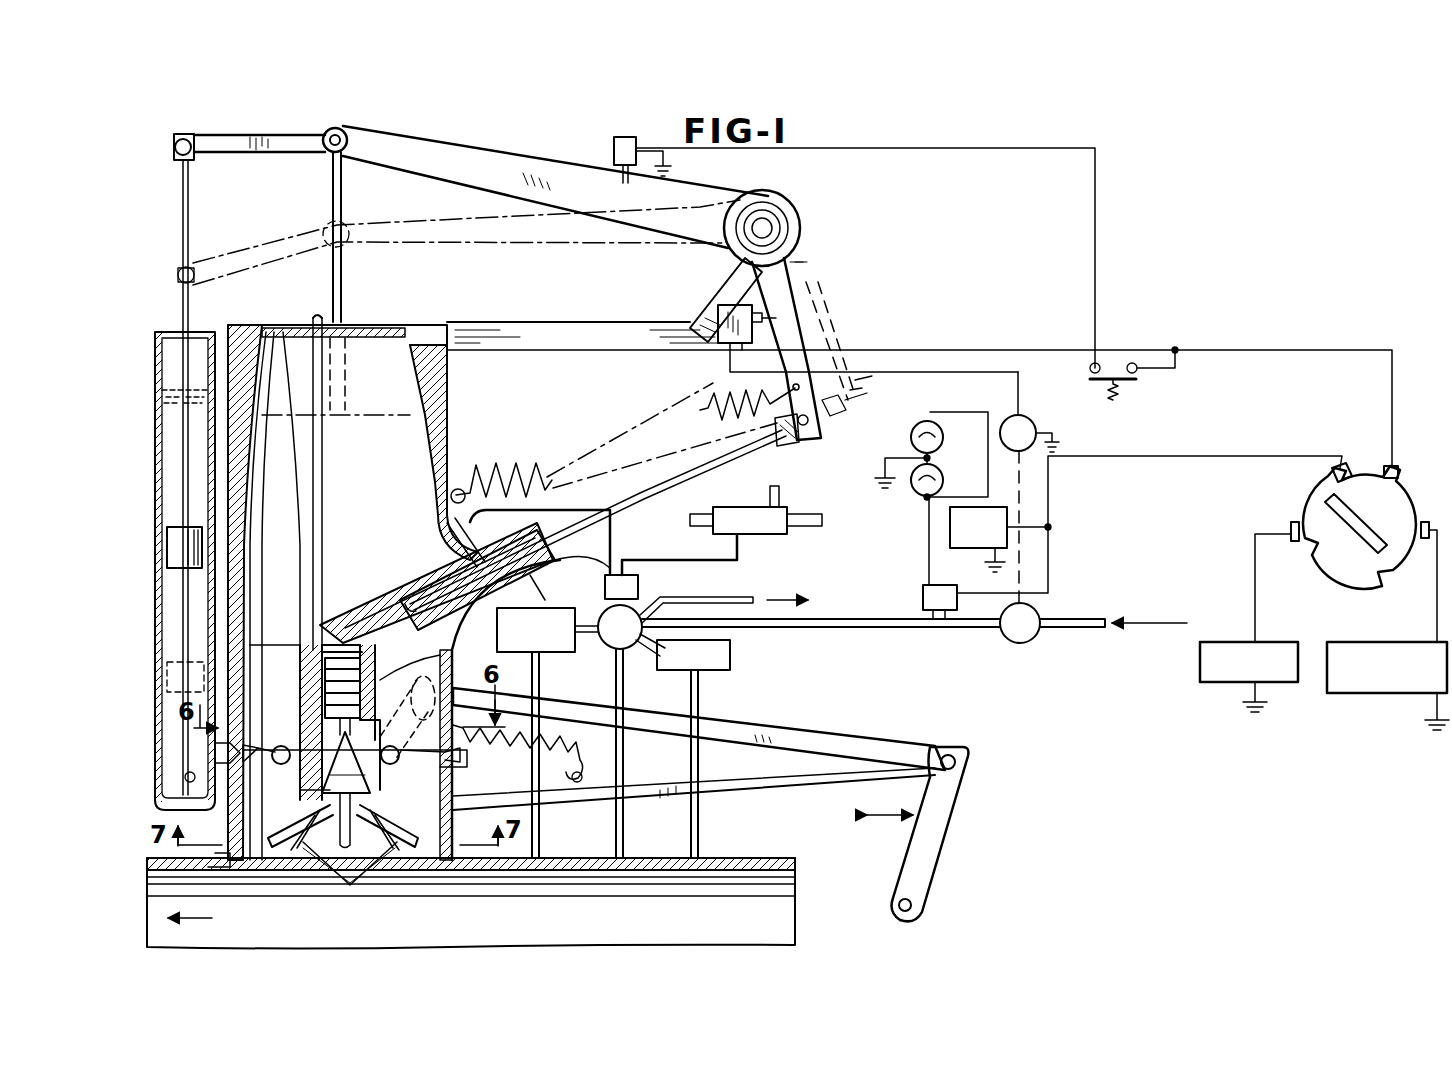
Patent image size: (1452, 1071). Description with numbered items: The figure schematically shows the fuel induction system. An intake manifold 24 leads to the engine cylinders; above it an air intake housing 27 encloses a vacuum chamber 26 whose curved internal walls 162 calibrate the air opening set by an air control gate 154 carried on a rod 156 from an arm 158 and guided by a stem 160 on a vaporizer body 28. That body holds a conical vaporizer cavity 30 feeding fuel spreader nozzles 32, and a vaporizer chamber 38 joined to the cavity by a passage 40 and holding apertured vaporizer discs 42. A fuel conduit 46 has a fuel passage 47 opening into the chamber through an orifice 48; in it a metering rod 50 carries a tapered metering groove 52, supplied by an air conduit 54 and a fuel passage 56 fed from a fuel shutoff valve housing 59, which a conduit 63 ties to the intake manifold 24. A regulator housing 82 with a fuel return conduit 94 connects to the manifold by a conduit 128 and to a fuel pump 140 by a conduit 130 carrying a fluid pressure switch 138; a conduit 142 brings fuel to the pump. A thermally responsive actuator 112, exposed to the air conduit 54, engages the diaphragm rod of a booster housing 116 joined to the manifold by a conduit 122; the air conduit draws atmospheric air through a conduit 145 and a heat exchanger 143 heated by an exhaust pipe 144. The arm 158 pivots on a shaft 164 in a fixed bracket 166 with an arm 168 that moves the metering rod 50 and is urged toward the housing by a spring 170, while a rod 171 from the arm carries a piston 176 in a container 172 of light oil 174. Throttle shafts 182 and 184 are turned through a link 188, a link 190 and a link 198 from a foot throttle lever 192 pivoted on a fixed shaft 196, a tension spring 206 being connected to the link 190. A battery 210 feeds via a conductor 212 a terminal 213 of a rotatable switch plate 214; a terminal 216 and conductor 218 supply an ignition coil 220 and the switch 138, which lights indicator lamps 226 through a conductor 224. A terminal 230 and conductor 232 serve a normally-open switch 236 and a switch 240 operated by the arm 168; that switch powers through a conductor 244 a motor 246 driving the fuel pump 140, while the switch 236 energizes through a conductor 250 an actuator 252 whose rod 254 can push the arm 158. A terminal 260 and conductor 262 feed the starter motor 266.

The intake manifold 24 is at (740, 858).
The mixing chamber 26 is at (345, 488).
The air intake housing 27 is at (238, 332).
The vaporizer body 28 is at (312, 716).
The vaporizer cavity 30 is at (362, 772).
The fuel spreader tubes 32 is at (348, 887).
The vaporizer chamber 38 is at (378, 685).
The passage 40 is at (338, 730).
The vaporizer discs 42 is at (322, 686).
The fuel conduit 46 is at (330, 622).
The fuel passage 47 is at (355, 610).
The orifice 48 is at (322, 652).
The metering rod 50 is at (722, 456).
The metering groove 52 is at (420, 582).
The air conduit 54 is at (598, 510).
The fuel passage 56 is at (530, 582).
The fuel shutoff valve housing 59 is at (546, 652).
The conduit 63 is at (540, 838).
The regulator housing 82 is at (607, 647).
The fuel return conduit 94 is at (728, 598).
The thermally responsive actuator device 112 is at (638, 582).
The booster housing 116 is at (730, 655).
The conduit 122 is at (700, 812).
The conduit 128 is at (624, 752).
The conduit 130 is at (910, 628).
The fluid pressure switch 138 is at (923, 594).
The fuel pump 140 is at (1020, 643).
The conduit 142 is at (1085, 628).
The heat exchanger 143 is at (750, 520).
The exhaust pipe 144 is at (700, 514).
The conduit 145 is at (779, 492).
The air control gate 154 is at (386, 345).
The rod 156 is at (333, 190).
The arm 158 is at (292, 133).
The stem 160 is at (323, 442).
The internal walls 162 is at (292, 328).
The shaft 164 is at (762, 228).
The fixed bracket 166 is at (705, 278).
The arm 168 is at (790, 292).
The spring 170 is at (718, 398).
The rod 171 is at (180, 184).
The container 172 is at (158, 422).
The light oil 174 is at (165, 392).
The piston 176 is at (165, 545).
The shaft 182 is at (292, 800).
The shaft 184 is at (398, 762).
The link 188 is at (300, 808).
The link 190 is at (663, 800).
The foot throttle lever 192 is at (948, 815).
The fixed shaft 196 is at (912, 905).
The link 198 is at (855, 742).
The tension spring 206 is at (552, 760).
The battery 210 is at (1200, 665).
The electric conductor 212 is at (1255, 570).
The terminal 213 is at (1292, 522).
The rotatable electrical switch plate 214 is at (1350, 565).
The terminal 216 is at (1332, 472).
The conductor 218 is at (1100, 456).
The ignition coil 220 is at (968, 555).
The conductor 224 is at (926, 528).
The indicator lamps 226 is at (937, 470).
The terminal 230 is at (1398, 464).
The conductor 232 is at (1280, 350).
The manually operable normally-open switch 236 is at (1120, 390).
The switch 240 is at (718, 312).
The conductor 244 is at (1020, 385).
The motor 246 is at (1020, 415).
The conductor 250 is at (862, 148).
The actuator 252 is at (624, 137).
The actuator rod 254 is at (625, 177).
The terminal 260 is at (1426, 522).
The conductor 262 is at (1437, 590).
The starter motor 266 is at (1358, 642).